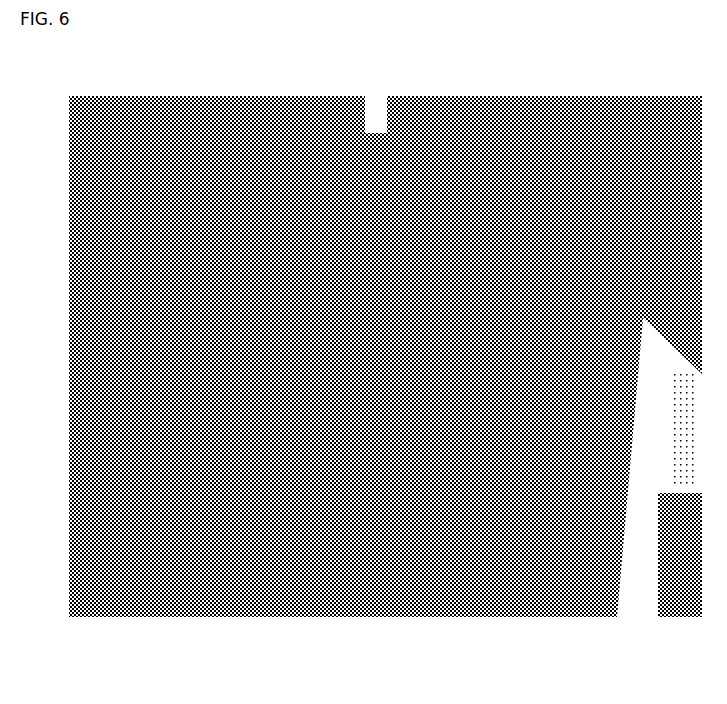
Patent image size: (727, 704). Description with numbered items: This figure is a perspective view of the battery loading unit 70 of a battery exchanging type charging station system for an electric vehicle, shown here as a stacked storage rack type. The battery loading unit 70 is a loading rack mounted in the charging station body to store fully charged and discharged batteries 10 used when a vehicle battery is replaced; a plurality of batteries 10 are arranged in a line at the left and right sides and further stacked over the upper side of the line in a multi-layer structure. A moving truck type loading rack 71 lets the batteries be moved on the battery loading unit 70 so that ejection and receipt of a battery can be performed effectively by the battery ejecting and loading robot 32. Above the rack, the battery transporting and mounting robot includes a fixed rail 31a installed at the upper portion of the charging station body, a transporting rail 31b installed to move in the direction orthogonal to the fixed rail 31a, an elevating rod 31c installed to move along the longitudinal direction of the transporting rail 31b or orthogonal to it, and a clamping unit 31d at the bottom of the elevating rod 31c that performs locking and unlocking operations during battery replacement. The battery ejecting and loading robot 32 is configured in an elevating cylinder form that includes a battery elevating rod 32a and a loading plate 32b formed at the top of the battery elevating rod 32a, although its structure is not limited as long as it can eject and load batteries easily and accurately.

The battery 10 is at (385, 356).
The battery loading unit 70 is at (344, 191).
The moving truck type loading rack 71 is at (344, 448).
The fixed rail 31a is at (344, 113).
The transporting rail 31b is at (344, 138).
The elevating rod 31c is at (510, 177).
The clamping unit 31d is at (344, 213).
The battery ejecting and loading robot 32 is at (291, 648).
The battery elevating rod 32a is at (268, 610).
The loading plate 32b is at (240, 600).